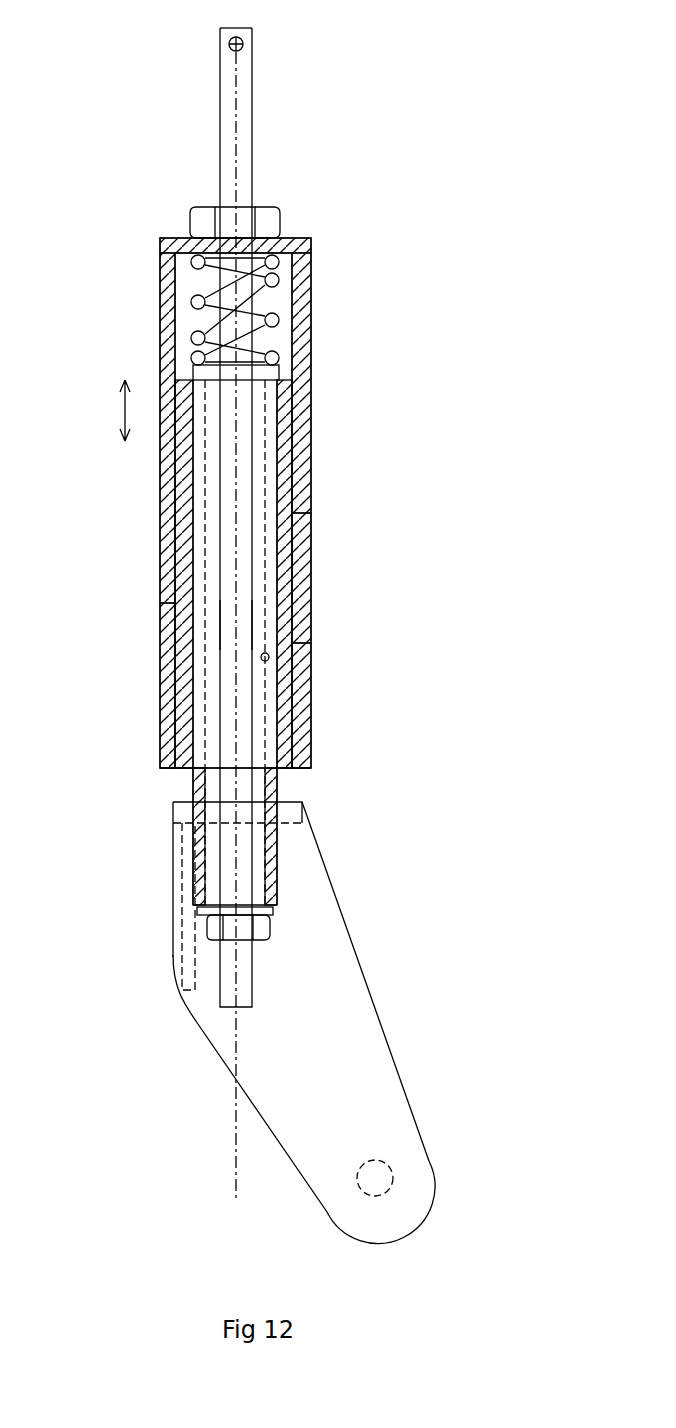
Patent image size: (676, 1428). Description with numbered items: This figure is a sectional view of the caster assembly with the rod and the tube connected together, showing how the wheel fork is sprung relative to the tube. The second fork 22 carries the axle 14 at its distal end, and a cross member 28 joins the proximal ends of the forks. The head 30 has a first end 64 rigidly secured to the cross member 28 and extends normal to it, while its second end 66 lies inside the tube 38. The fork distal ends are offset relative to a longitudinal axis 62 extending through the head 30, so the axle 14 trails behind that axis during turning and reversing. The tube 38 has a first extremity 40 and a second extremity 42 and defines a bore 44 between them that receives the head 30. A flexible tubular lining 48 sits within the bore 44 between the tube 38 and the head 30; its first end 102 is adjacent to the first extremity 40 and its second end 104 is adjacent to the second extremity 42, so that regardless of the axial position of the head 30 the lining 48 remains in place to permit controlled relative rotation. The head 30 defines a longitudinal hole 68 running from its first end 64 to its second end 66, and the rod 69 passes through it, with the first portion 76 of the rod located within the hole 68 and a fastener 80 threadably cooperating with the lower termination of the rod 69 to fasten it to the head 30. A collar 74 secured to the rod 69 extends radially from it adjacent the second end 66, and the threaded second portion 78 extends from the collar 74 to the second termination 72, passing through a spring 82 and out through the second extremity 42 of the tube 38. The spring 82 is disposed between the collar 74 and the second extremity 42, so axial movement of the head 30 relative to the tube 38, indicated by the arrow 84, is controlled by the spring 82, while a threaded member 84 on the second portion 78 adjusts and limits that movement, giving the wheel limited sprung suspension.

The axle 14 is at (385, 1178).
The second fork 22 is at (372, 1082).
The cross member 28 is at (255, 800).
The head 30 is at (253, 502).
The tube 38 is at (302, 337).
The first extremity 40 is at (303, 707).
The second extremity 42 is at (303, 263).
The bore 44 is at (187, 615).
The flexible tubular lining 48 is at (288, 563).
The longitudinal axis 62 is at (240, 953).
The first end 64 is at (253, 776).
The second end 66 is at (258, 408).
The longitudinal hole 68 is at (265, 655).
The rod 69 is at (245, 625).
The second termination 72 is at (241, 68).
The collar 74 is at (265, 367).
The first portion 76 is at (230, 517).
The second portion 78 is at (240, 165).
The fastener 80 is at (215, 930).
The spring 82 is at (312, 240).
The threaded member 84 is at (198, 227).
The first end 102 is at (185, 747).
The second end 104 is at (177, 265).